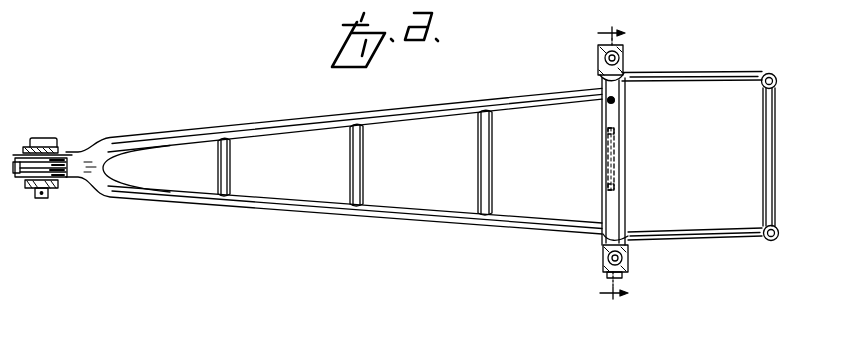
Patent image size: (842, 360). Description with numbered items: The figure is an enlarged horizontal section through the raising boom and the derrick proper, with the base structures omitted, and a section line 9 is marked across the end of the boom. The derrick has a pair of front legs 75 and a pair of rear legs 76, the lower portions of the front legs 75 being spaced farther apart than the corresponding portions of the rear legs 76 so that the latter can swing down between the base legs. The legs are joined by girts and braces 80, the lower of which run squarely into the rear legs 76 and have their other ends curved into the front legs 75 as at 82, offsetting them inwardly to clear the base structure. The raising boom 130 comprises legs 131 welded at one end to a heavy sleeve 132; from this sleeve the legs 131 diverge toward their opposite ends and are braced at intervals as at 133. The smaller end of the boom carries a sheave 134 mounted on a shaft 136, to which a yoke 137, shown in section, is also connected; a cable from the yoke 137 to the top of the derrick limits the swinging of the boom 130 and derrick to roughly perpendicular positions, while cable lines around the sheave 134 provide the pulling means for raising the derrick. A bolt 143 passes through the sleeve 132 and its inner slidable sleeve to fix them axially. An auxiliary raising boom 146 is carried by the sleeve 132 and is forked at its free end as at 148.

The section line 9- 9 is at (613, 168).
The front legs 75 is at (627, 50).
The rear legs 76 is at (773, 70).
The girts and braces 80 is at (667, 239).
The curved ends of girts and braces 82 is at (625, 75).
The raising boom 130 is at (334, 167).
The legs 131 is at (458, 102).
The heavy sleeve 132 is at (627, 175).
The braces 133 is at (487, 163).
The sheave 134 is at (57, 160).
The shaft 136 is at (43, 140).
The yoke 137 is at (48, 192).
The bolt 143 is at (616, 100).
The auxiliary raising boom 146 is at (604, 153).
The forked end 148 is at (605, 133).